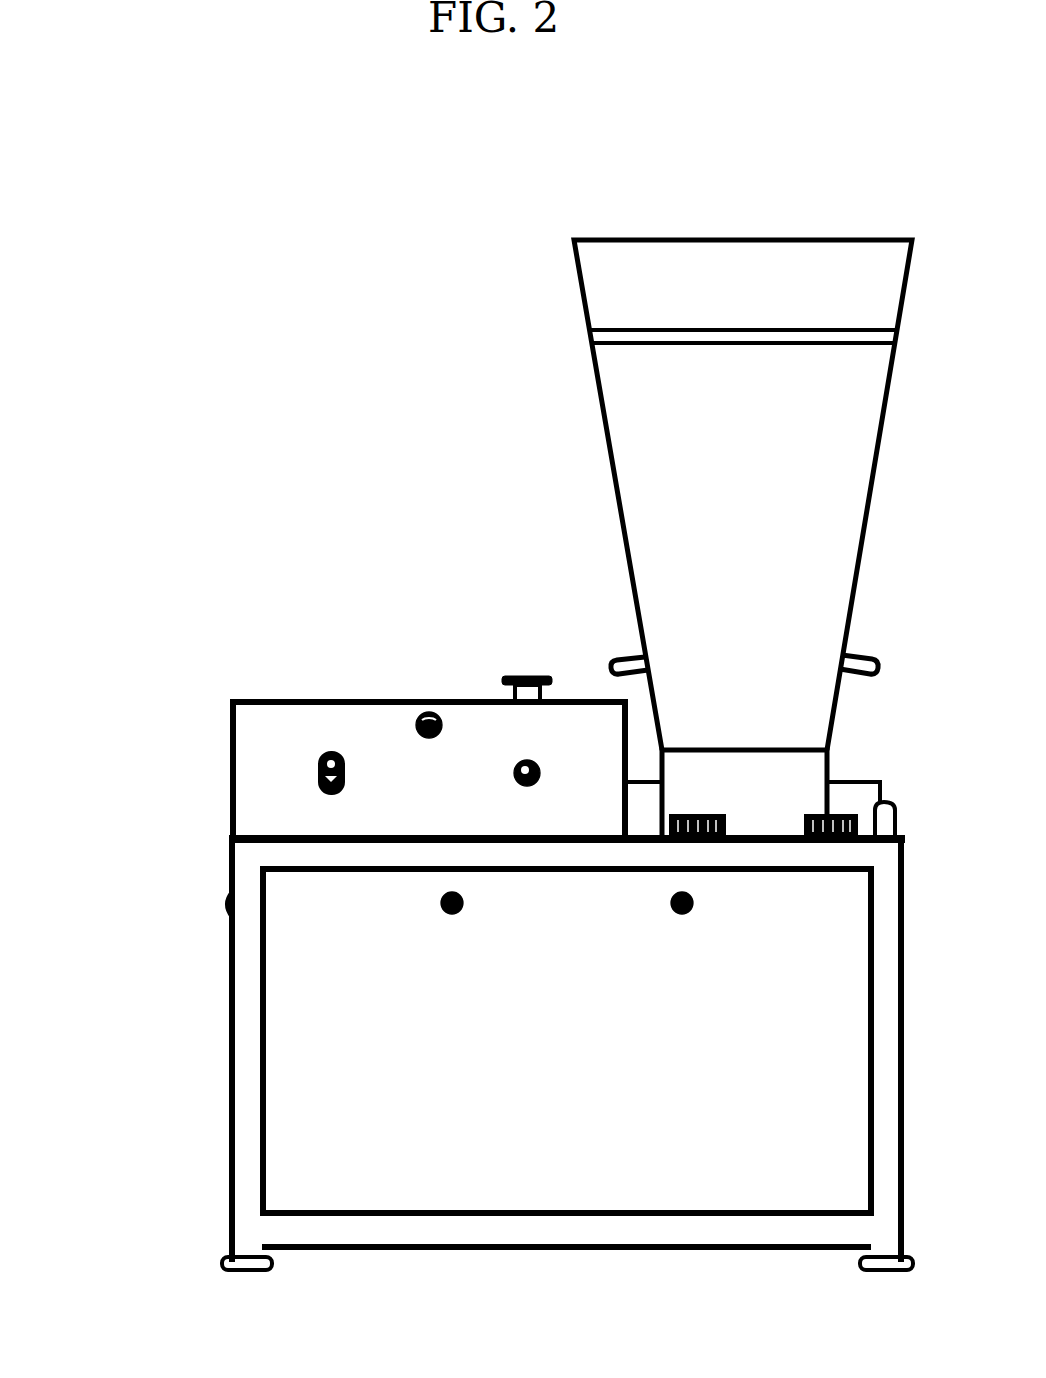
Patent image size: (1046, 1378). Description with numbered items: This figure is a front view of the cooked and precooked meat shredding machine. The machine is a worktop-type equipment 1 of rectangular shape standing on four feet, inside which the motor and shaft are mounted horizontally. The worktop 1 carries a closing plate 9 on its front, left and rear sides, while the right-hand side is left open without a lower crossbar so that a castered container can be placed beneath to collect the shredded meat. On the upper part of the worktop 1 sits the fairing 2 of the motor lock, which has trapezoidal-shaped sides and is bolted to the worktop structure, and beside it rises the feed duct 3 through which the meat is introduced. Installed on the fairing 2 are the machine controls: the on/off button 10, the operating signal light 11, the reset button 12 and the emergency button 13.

The worktop 1 is at (280, 851).
The fairing 2 is at (252, 726).
The feed duct 3 is at (733, 313).
The closing plate 9 is at (582, 1122).
The on/off button 10 is at (327, 753).
The operating signal light 11 is at (420, 713).
The reset button 12 is at (517, 762).
The emergency button 13 is at (527, 678).